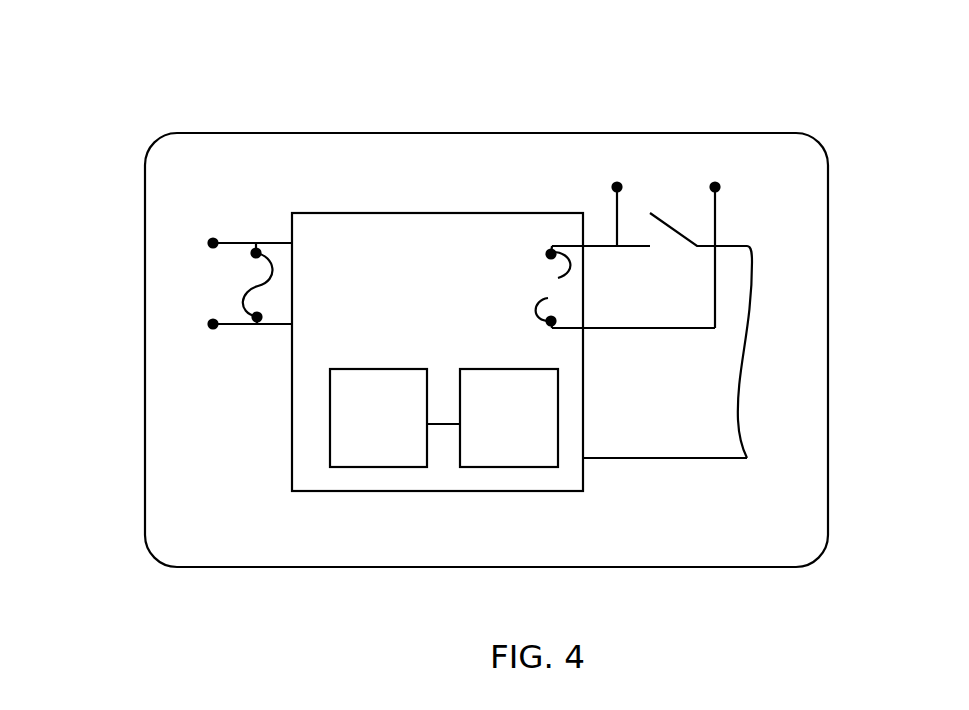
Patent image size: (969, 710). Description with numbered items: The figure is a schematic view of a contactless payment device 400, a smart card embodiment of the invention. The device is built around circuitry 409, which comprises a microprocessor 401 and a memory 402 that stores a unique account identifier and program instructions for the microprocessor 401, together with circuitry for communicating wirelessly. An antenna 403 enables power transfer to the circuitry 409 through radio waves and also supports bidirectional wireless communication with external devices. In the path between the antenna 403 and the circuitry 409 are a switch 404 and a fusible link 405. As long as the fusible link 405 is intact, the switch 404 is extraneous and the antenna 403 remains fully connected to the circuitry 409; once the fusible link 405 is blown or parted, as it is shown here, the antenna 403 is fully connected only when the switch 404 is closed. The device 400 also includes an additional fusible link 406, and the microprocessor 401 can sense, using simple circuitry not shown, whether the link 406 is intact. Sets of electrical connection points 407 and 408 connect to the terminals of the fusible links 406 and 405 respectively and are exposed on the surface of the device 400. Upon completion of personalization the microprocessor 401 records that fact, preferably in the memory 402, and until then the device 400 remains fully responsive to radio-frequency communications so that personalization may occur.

The contactless payment device 400 is at (780, 133).
The microprocessor 401 is at (372, 467).
The memory 402 is at (501, 467).
The antenna 403 is at (752, 258).
The switch 404 is at (660, 217).
The fusible link 405 is at (545, 288).
The additional fusible link 406 is at (240, 297).
The electrical connection points 407 is at (209, 243).
The electrical connection points 408 is at (618, 177).
The circuitry 409 is at (380, 213).